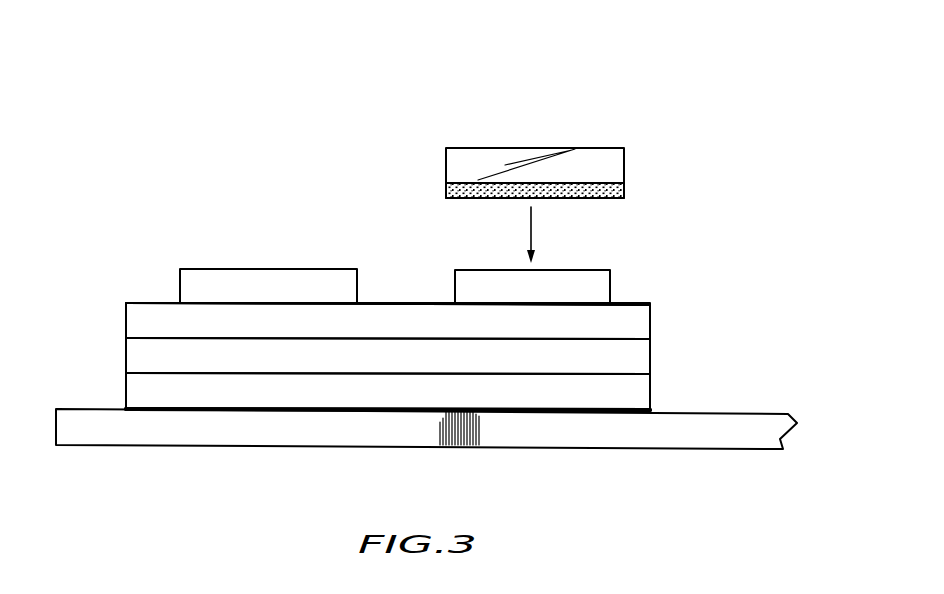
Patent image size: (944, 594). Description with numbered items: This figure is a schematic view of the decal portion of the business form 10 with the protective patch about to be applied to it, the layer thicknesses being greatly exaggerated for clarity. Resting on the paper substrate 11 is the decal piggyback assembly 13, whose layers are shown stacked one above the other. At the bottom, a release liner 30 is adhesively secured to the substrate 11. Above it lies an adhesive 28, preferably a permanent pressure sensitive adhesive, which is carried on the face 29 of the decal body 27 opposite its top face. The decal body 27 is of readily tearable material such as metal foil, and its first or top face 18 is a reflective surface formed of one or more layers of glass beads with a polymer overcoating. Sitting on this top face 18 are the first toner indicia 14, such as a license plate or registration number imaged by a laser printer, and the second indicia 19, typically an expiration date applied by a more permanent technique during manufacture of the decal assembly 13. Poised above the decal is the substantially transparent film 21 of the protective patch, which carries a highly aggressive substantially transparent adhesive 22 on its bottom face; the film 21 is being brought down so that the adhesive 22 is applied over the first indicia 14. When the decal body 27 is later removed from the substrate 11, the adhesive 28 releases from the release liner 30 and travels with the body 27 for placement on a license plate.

The business form 10 is at (803, 390).
The paper substrate 11 is at (678, 425).
The decal assembly 13 is at (157, 234).
The first toner indicia 14 is at (593, 282).
The top face 18 is at (408, 303).
The second indicia 19 is at (273, 268).
The transparent film 21 is at (660, 145).
The transparent adhesive 22 is at (447, 188).
The decal body 27 is at (152, 313).
The adhesive 28 is at (137, 354).
The face 29 is at (622, 343).
The release liner 30 is at (148, 403).